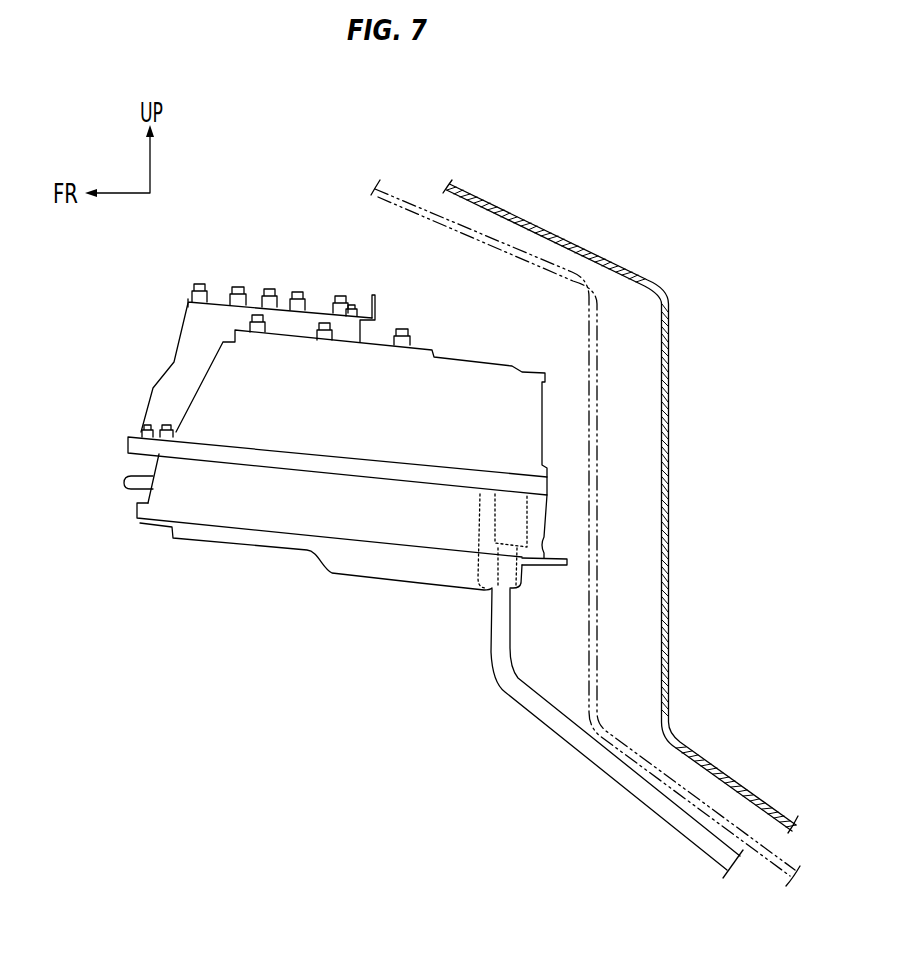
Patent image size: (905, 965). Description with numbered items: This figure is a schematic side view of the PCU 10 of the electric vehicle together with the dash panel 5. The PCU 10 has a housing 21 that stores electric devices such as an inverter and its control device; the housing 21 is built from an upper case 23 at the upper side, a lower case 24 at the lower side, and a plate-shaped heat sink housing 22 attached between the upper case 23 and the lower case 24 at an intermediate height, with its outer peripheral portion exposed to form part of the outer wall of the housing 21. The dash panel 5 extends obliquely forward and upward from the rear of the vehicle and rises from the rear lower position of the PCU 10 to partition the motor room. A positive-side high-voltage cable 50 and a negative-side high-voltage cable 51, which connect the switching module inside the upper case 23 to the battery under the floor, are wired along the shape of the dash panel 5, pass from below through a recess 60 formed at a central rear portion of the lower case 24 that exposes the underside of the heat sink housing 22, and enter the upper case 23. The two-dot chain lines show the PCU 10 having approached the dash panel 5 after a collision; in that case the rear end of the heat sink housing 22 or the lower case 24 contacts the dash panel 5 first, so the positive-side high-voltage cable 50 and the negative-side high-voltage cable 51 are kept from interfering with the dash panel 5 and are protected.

The dash panel 5 is at (528, 252).
The PCU 10 is at (252, 262).
The housing 21 is at (61, 362).
The heat sink housing 22 is at (137, 445).
The upper case 23 is at (177, 372).
The lower case 24 is at (170, 490).
The positive-side high-voltage cable 50 is at (630, 790).
The negative-side high-voltage cable 51 is at (617, 733).
The recess 60 is at (481, 587).